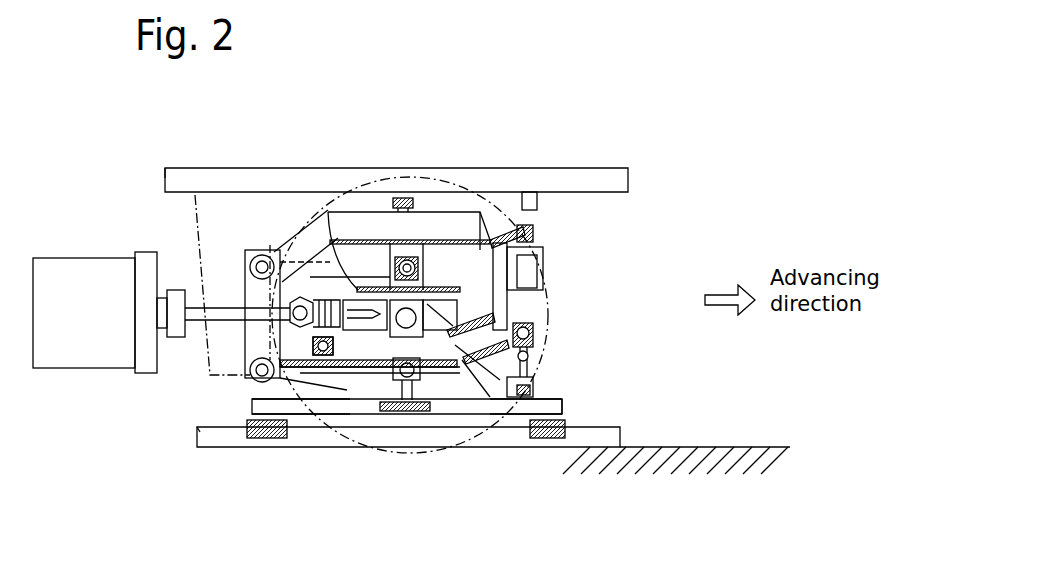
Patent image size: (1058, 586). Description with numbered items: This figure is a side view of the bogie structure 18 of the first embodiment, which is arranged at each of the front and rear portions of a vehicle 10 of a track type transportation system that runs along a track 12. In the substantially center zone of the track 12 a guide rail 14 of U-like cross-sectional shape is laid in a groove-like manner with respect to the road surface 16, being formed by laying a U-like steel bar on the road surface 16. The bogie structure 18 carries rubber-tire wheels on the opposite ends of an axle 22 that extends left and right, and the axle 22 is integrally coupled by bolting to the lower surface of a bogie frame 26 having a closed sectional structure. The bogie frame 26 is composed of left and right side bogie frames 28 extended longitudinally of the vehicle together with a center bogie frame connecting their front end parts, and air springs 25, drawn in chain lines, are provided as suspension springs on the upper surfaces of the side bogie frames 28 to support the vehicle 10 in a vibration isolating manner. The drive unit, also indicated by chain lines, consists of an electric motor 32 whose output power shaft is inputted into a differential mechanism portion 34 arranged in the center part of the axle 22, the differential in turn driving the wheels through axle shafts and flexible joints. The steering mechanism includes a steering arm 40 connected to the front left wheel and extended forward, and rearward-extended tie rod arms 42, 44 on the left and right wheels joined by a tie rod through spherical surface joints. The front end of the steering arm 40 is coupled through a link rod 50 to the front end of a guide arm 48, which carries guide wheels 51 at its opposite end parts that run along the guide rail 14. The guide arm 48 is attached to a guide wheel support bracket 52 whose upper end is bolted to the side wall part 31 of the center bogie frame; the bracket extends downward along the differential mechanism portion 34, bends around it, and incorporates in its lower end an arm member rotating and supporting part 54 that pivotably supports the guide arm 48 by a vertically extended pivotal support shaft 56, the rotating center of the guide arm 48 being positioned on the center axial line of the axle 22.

The vehicle 10 is at (590, 178).
The track 12 is at (687, 440).
The guide rail 14 is at (593, 433).
The road surface 16 is at (650, 447).
The bogie structure 18 is at (575, 243).
The axle 22 is at (523, 297).
The air spring 25 is at (347, 227).
The bogie frame 26 is at (548, 266).
The side bogie frame 28 is at (450, 255).
The side wall part 31 is at (462, 242).
The electric motor 32 is at (52, 372).
The differential mechanism portion 34 is at (552, 326).
The steering arm 40 is at (478, 380).
The tie rod arm 42 is at (347, 350).
The tie rod arm 44 is at (323, 346).
The guide arm 48 is at (247, 405).
The link rod 50 is at (533, 363).
The guide wheel 51 is at (253, 447).
The guide wheel support bracket 52 is at (470, 363).
The arm member rotating and supporting part 54 is at (392, 437).
The pivotal support shaft 56 is at (368, 452).